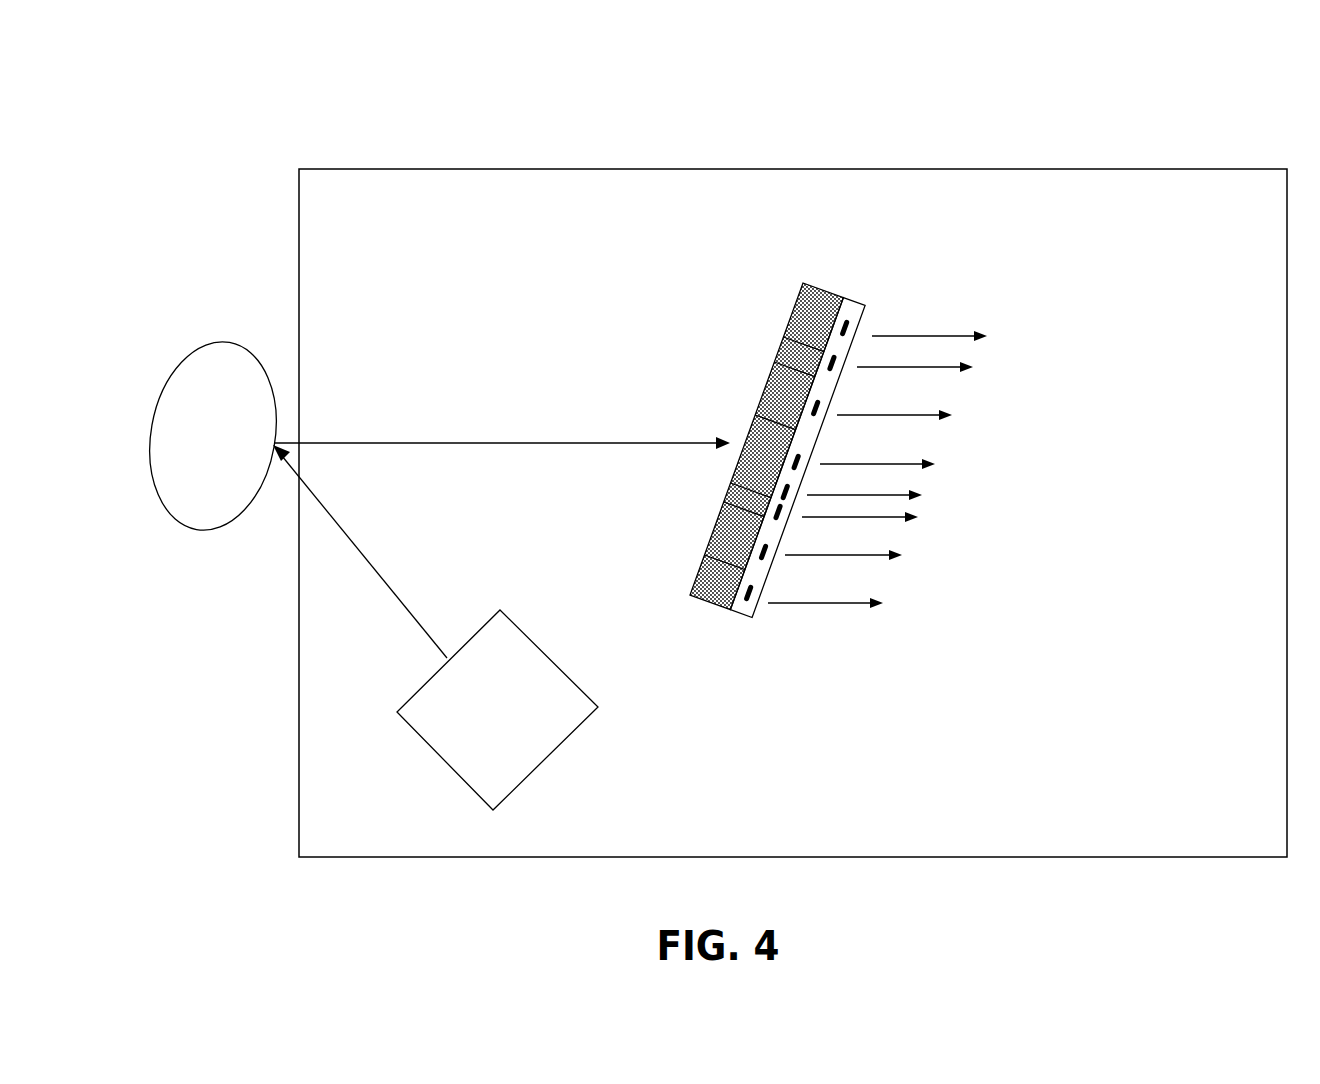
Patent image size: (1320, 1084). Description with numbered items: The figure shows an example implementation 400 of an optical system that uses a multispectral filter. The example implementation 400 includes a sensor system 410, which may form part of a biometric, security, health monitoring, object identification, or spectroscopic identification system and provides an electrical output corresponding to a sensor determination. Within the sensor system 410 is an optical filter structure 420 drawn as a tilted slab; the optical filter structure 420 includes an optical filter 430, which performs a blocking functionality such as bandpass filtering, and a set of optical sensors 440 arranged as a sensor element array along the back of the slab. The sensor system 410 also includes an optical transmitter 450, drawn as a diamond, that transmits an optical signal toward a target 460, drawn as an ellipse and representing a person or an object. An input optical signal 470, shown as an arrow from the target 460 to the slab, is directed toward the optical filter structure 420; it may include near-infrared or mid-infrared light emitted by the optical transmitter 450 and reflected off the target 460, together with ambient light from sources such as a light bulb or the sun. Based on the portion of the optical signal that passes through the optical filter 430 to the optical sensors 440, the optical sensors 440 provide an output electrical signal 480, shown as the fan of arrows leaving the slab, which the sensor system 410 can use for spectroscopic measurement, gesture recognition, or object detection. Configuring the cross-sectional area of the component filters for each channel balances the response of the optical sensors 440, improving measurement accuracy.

The example implementation 400 is at (214, 63).
The sensor system 410 is at (798, 165).
The optical filter structure 420 is at (857, 300).
The optical filter 430 is at (693, 598).
The optical sensors 440 is at (747, 620).
The optical transmitter 450 is at (478, 719).
The target 460 is at (194, 446).
The input optical signal 470 is at (544, 396).
The output electrical signal 480 is at (998, 416).